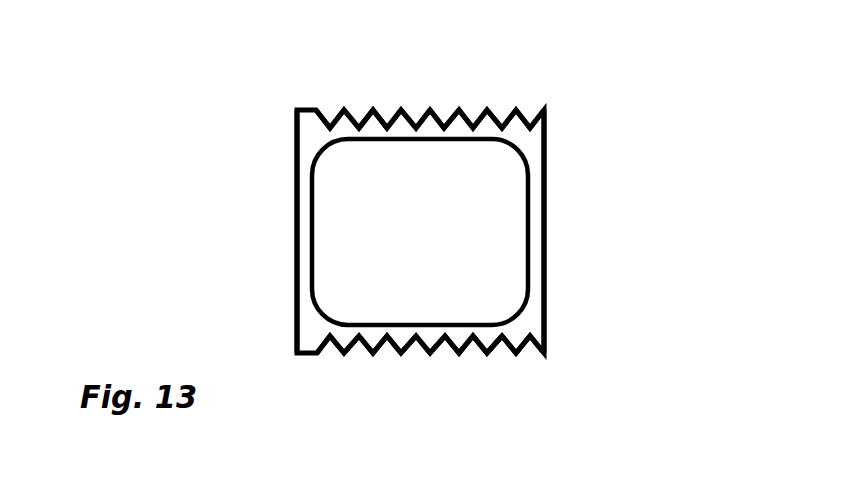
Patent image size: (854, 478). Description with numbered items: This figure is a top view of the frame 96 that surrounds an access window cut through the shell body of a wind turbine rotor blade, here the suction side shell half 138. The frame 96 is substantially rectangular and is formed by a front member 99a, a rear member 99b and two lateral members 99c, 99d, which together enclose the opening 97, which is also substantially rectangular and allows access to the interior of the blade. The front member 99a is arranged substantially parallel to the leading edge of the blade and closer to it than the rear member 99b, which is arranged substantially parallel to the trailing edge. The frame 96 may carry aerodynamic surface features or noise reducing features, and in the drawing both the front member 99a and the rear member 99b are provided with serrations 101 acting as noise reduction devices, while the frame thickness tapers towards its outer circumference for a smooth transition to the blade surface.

The frame 96 is at (410, 233).
The opening 97 is at (497, 233).
The front member 99a is at (488, 127).
The rear member 99b is at (343, 333).
The lateral member 99c is at (297, 280).
The lateral member 99d is at (540, 168).
The serrations 101 is at (373, 110).
The suction side shell half 138 is at (293, 172).